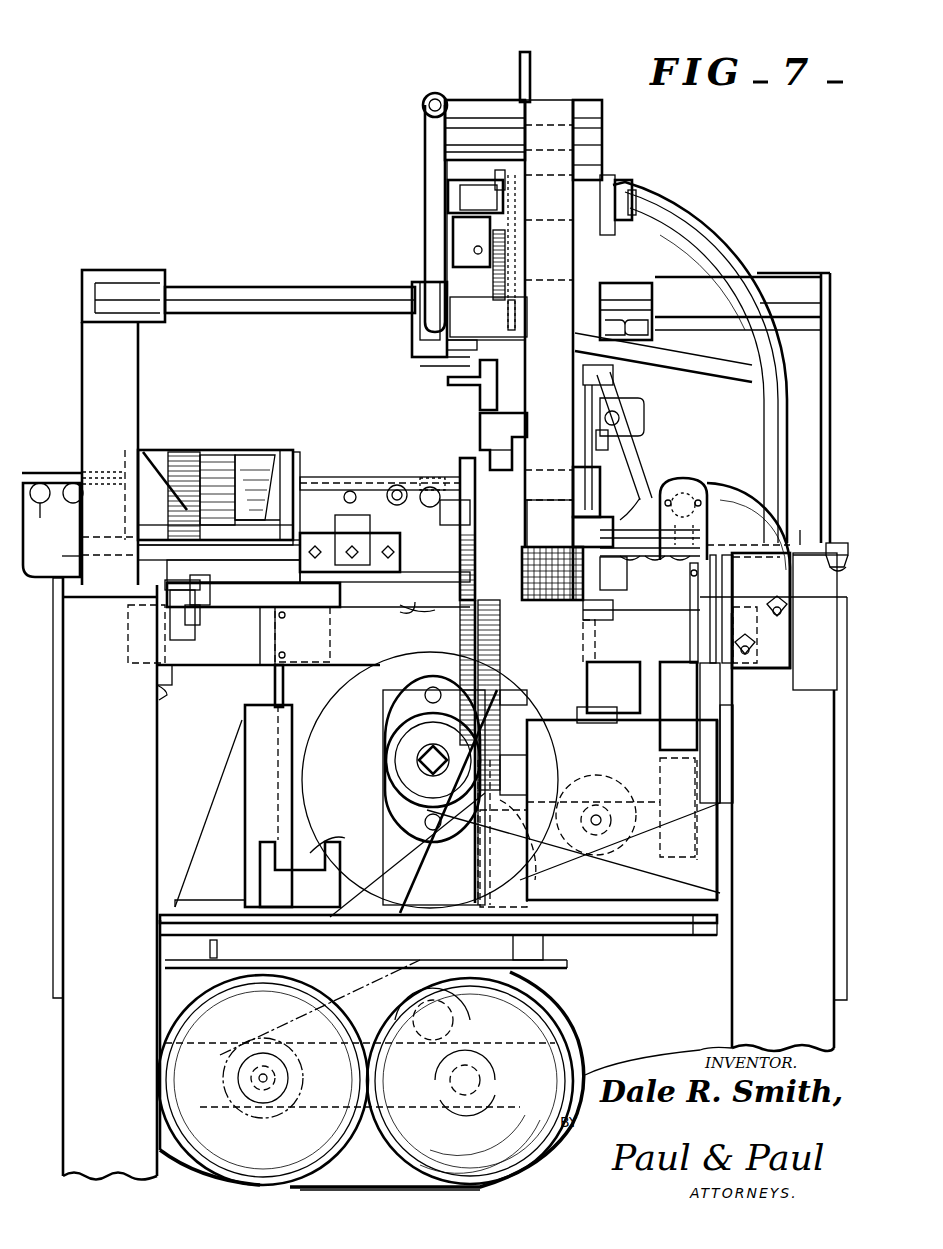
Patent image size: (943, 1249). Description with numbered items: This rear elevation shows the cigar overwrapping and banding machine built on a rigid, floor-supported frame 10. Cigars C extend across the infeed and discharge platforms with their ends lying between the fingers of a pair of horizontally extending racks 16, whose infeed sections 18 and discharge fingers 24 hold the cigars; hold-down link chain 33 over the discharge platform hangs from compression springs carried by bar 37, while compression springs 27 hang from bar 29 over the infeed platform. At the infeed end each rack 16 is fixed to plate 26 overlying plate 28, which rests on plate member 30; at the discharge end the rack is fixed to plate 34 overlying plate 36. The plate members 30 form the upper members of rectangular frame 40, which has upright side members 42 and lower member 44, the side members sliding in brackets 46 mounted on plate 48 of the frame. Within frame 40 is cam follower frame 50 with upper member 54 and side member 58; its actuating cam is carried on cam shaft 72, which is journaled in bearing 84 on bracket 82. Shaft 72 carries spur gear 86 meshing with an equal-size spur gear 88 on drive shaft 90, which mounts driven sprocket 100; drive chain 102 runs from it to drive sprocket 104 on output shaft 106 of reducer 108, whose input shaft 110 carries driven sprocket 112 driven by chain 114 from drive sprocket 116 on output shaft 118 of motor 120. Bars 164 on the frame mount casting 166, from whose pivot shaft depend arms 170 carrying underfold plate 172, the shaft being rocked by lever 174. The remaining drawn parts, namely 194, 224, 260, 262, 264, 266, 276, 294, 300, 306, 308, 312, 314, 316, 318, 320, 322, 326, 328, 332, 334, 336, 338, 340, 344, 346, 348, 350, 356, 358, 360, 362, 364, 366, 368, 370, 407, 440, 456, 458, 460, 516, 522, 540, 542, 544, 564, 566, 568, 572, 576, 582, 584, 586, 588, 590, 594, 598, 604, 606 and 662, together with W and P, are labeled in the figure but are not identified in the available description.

The frame 10 is at (80, 1032).
The racks 16 is at (64, 557).
The infeed sections of the racks 18 is at (655, 568).
The fingers 24 is at (76, 501).
The plate 26 is at (695, 600).
The compression springs 27 is at (811, 546).
The plate 28 is at (723, 632).
The bar 29 is at (838, 543).
The plate member 30 is at (250, 615).
The hold-down link chain 33 is at (55, 483).
The plate 34 is at (160, 696).
The plate 36 is at (160, 678).
The bar 37 is at (32, 472).
The rectangular frame 40 is at (272, 680).
The side members 42 is at (275, 733).
The lower member 44 is at (295, 880).
The brackets 46 is at (237, 783).
The plate 48 is at (238, 901).
The cam follower frame 50 is at (425, 623).
The upper member 54 is at (410, 622).
The side member 58 is at (330, 670).
The cam shaft 72 is at (420, 758).
The bracket 82 is at (340, 852).
The bearing 84 is at (420, 730).
The spur gear 86 is at (408, 658).
The spur gear 88 is at (560, 990).
The drive shaft 90 is at (460, 1018).
The driven sprocket 100 is at (398, 1000).
The drive chain 102 is at (290, 1026).
The drive sprocket 104 is at (275, 1040).
The output shaft 106 is at (250, 1057).
The reducer 108 is at (175, 1095).
The input shaft 110 is at (245, 1066).
The driven sprocket 112 is at (305, 1063).
The drive chain 114 is at (323, 1121).
The drive sprocket 116 is at (450, 1092).
The output shaft 118 is at (490, 1070).
The motor 120 is at (418, 1156).
The bars 164 is at (268, 298).
The casting 166 is at (618, 300).
The arms 170 is at (630, 409).
The underfold plate 172 is at (625, 515).
The lever 174 is at (718, 343).
The pin 194 is at (618, 427).
The bracket 224 is at (498, 435).
The link 260 is at (613, 381).
The lever 262 is at (483, 379).
The arcuate guide 264 is at (719, 262).
The pin 266 is at (497, 180).
The guide track 276 is at (662, 199).
The block 294 is at (453, 194).
The web feed 300 is at (505, 58).
The block 306 is at (633, 183).
The plate 308 is at (608, 188).
The bracket 312 is at (413, 277).
The tube 314 is at (428, 144).
The plate 316 is at (420, 342).
The bar 318 is at (425, 368).
The chain 320 is at (512, 283).
The chain 322 is at (510, 200).
The sprocket 326 is at (506, 253).
The block 328 is at (453, 234).
The plate 332 is at (603, 160).
The head 334 is at (475, 130).
The block 336 is at (583, 497).
The block 338 is at (585, 525).
The plate 340 is at (615, 616).
The bar 344 is at (463, 460).
The bracket 346 is at (665, 486).
The pad 348 is at (560, 547).
The bracket 350 is at (505, 715).
The rack 356 is at (457, 582).
The belt 358 is at (488, 813).
The belt 360 is at (542, 810).
The housing 362 is at (722, 800).
The pulley 364 is at (632, 835).
The block 366 is at (598, 775).
The plate 368 is at (640, 758).
The support plate 370 is at (450, 852).
The curved bracket 407 is at (748, 575).
The post 440 is at (708, 692).
The block 456 is at (681, 676).
The bracket 458 is at (501, 761).
The plate 460 is at (635, 735).
The bolt 516 is at (395, 488).
The block 522 is at (306, 634).
The bolt 540 is at (348, 493).
The block 542 is at (442, 516).
The plate 544 is at (362, 482).
The gear unit 564 is at (232, 408).
The cone 566 is at (277, 472).
The plate 568 is at (237, 522).
The base plate 572 is at (210, 523).
The post 576 is at (315, 598).
The plate 582 is at (213, 569).
The bracket 584 is at (193, 617).
The plate 586 is at (187, 570).
The rod 588 is at (187, 495).
The cone 590 is at (250, 464).
The cylinder 594 is at (215, 470).
The plate 598 is at (300, 453).
The gear 604 is at (182, 452).
The bracket 606 is at (160, 593).
The block 662 is at (60, 623).
The web W is at (548, 110).
The product P is at (50, 548).
The cigars C is at (832, 562).